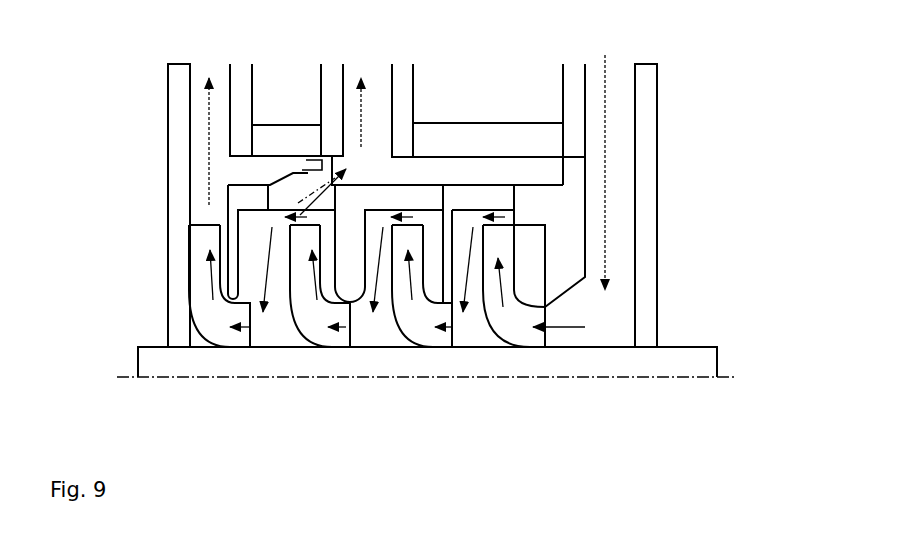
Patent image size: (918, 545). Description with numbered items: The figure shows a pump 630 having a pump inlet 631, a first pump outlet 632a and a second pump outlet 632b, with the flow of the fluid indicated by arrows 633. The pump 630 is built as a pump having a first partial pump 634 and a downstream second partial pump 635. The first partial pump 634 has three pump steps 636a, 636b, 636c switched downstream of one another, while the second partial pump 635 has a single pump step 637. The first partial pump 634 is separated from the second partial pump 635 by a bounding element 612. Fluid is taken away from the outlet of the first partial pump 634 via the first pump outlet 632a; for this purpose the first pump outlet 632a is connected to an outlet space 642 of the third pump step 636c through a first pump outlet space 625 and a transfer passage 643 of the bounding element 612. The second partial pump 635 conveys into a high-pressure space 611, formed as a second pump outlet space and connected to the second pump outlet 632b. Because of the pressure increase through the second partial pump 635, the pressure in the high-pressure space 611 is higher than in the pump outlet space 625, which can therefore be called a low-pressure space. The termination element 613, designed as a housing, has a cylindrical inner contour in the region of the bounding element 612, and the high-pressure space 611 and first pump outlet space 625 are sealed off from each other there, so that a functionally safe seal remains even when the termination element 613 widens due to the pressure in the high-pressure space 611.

The high-pressure space 611 is at (188, 158).
The bounding element 612 is at (352, 287).
The termination element 613 is at (493, 137).
The first pump outlet space 625 is at (422, 165).
The pump 630 is at (670, 203).
The pump inlet 631 is at (623, 67).
The first pump outlet 632a is at (382, 73).
The second pump outlet 632b is at (220, 73).
The arrows 633 is at (600, 72).
The first partial pump 634 is at (512, 386).
The second partial pump 635 is at (230, 360).
The pump step 636a is at (558, 360).
The pump step 636b is at (455, 360).
The third pump step 636c is at (312, 360).
The pump step 637 is at (207, 347).
The outlet space 642 is at (282, 335).
The transfer passage 643 is at (315, 193).